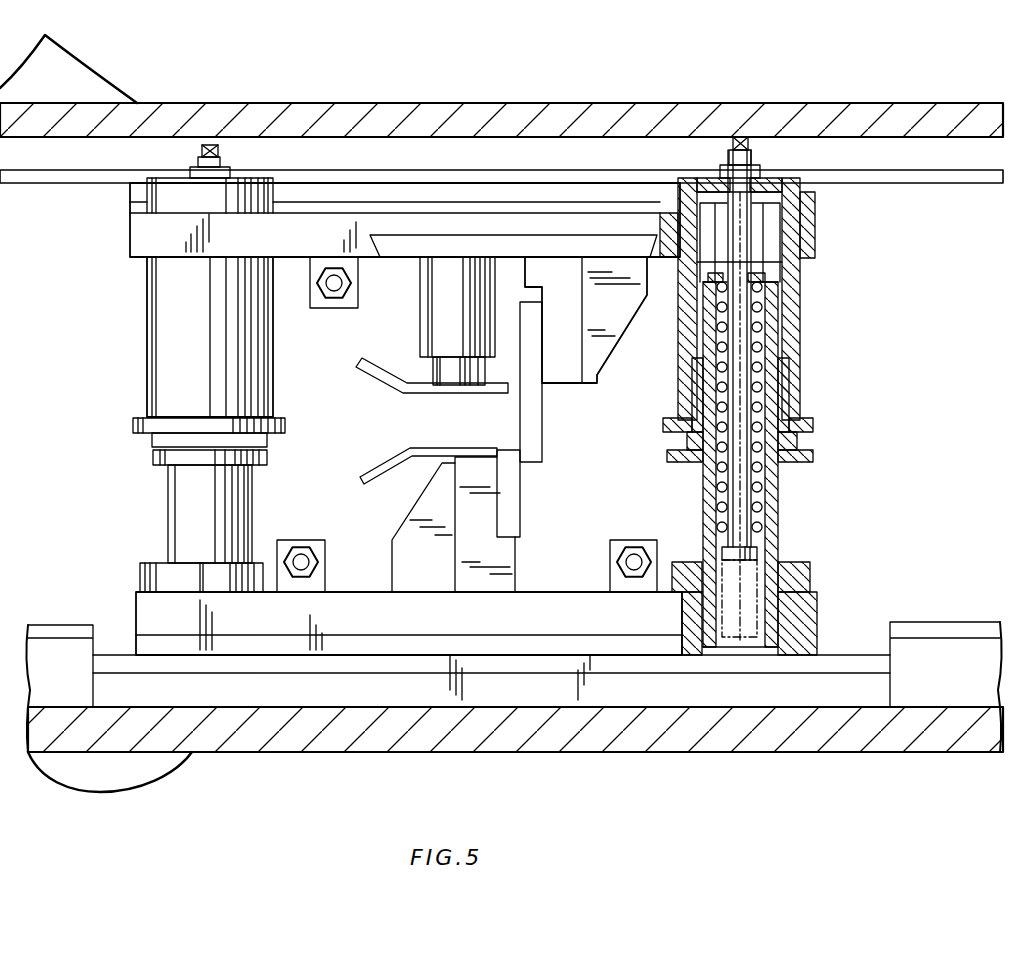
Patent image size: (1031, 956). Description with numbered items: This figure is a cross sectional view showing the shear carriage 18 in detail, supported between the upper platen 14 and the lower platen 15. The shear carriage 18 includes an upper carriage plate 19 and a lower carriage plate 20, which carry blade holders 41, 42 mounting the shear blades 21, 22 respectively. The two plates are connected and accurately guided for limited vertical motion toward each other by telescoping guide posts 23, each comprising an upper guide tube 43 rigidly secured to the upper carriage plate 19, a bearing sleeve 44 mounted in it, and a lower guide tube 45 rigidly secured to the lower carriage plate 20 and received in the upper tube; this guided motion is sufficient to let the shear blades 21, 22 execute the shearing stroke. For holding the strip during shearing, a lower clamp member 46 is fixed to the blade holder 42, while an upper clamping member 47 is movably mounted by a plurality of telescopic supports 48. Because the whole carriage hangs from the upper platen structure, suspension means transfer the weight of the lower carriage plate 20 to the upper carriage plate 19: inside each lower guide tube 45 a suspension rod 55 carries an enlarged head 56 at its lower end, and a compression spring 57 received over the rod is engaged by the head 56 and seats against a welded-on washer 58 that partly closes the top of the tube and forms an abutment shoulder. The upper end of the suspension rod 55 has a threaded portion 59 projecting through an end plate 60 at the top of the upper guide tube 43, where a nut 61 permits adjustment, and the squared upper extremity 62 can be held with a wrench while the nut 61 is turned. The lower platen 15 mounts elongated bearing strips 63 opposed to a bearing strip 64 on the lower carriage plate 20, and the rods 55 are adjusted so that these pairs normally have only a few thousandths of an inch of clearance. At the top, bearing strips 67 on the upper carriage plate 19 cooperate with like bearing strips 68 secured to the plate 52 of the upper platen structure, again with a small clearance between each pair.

The upper platen 14 is at (66, 69).
The lower platen 15 is at (112, 781).
The shear carriage 18 is at (294, 512).
The upper carriage plate 19 is at (128, 248).
The lower carriage plate 20 is at (152, 608).
The shear blade 21 is at (531, 381).
The shear blade 22 is at (510, 500).
The telescoping guide posts 23 is at (818, 357).
The blade holder 41 is at (574, 376).
The blade holder 42 is at (407, 518).
The upper guide tube 43 is at (163, 338).
The bearing sleeve 44 is at (785, 400).
The lower guide tube 45 is at (182, 512).
The lower clamp member 46 is at (388, 462).
The upper clamping member 47 is at (382, 385).
The telescopic supports 48 is at (433, 330).
The plate 52 is at (405, 105).
The suspension rod 55 is at (738, 332).
The enlarged head 56 is at (752, 568).
The compression spring 57 is at (770, 490).
The washer 58 is at (808, 270).
The threaded portion 59 is at (767, 172).
The end plate 60 is at (710, 175).
The nut 61 is at (762, 182).
The upper extremity 62 is at (220, 150).
The bearing strips 63 is at (383, 665).
The bearing strip 64 is at (512, 645).
The bearing strips 67 is at (388, 178).
The bearing strips 68 is at (569, 198).